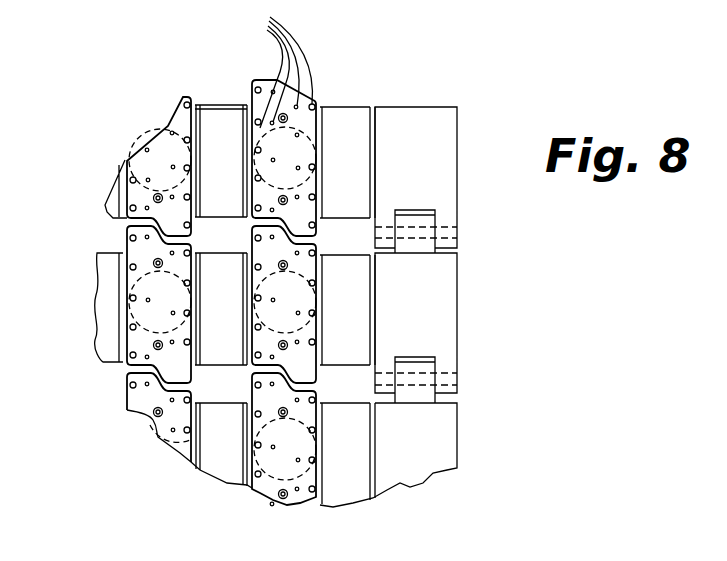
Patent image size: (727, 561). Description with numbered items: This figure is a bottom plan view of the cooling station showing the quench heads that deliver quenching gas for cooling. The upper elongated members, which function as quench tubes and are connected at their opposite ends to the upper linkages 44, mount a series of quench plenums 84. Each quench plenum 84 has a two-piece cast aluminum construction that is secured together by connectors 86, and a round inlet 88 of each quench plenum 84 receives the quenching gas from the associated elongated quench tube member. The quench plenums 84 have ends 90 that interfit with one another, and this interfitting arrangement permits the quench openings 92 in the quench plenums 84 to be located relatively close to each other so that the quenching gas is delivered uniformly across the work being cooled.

The upper linkages 44 is at (457, 318).
The quench plenums 84 is at (133, 192).
The connectors 86 is at (287, 195).
The round inlet 88 is at (330, 118).
The ends 90 is at (153, 233).
The quench openings 92 is at (274, 70).